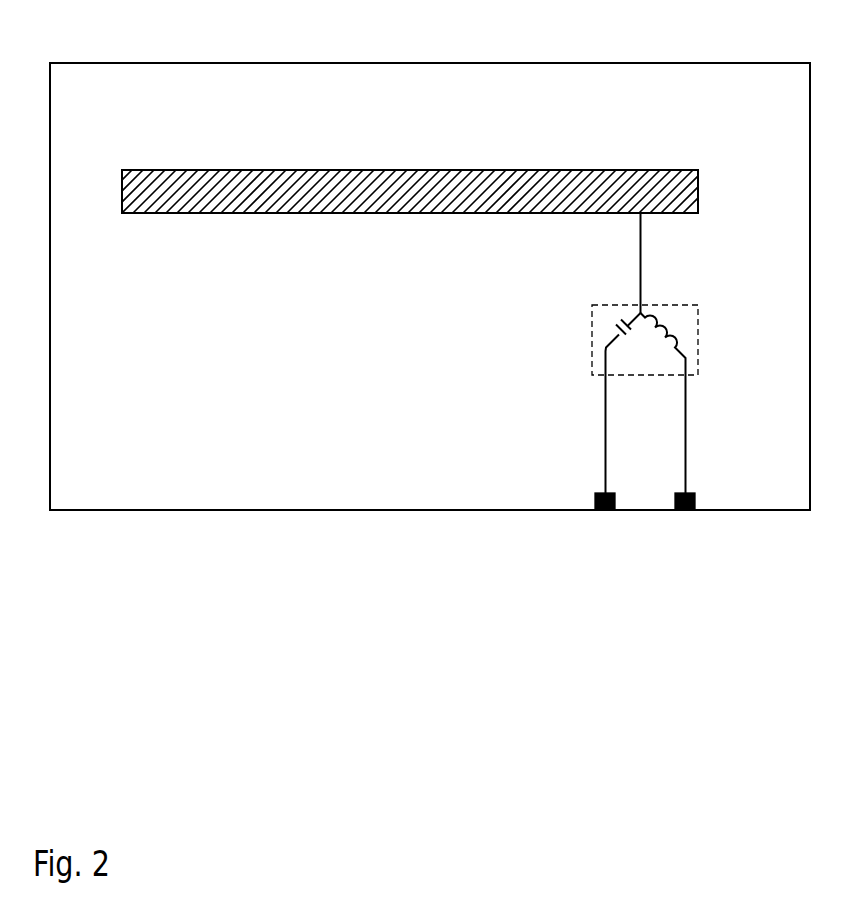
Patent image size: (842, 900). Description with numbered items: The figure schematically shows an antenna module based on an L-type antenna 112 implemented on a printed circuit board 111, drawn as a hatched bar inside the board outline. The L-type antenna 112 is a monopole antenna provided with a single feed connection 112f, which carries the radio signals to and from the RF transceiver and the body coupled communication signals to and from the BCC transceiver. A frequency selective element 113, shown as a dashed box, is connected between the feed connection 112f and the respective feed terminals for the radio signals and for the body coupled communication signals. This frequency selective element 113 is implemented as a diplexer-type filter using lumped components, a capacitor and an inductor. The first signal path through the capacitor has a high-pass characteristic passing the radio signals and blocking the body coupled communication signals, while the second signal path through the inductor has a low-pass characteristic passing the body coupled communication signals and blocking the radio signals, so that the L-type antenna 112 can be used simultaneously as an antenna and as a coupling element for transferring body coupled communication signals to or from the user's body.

The printed circuit board 111 is at (733, 63).
The L-type antenna 112 is at (660, 170).
The feed connection 112f is at (637, 241).
The frequency selective element 113 is at (676, 305).